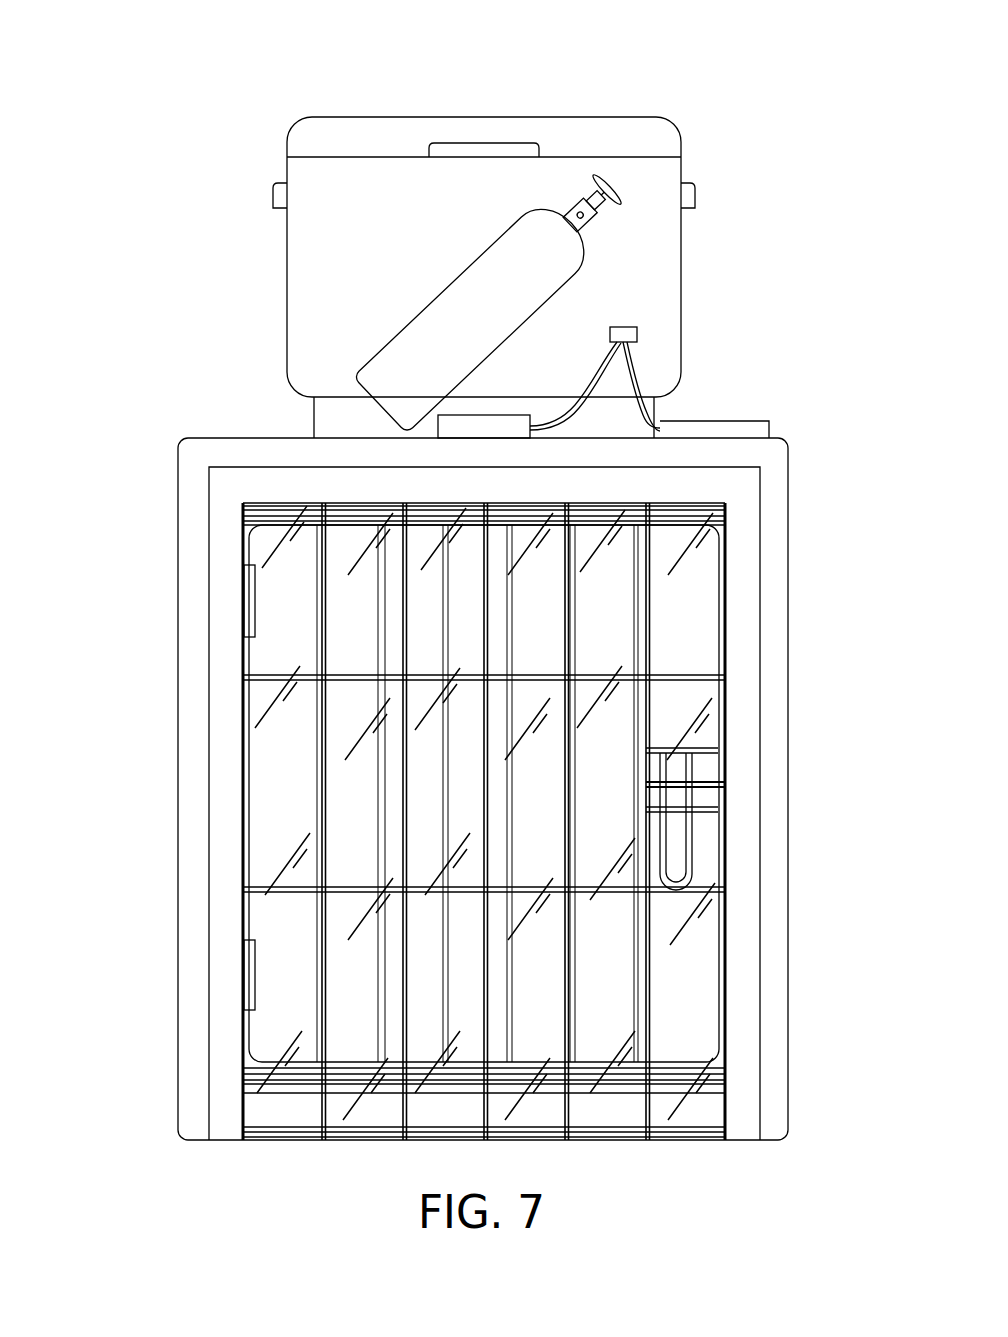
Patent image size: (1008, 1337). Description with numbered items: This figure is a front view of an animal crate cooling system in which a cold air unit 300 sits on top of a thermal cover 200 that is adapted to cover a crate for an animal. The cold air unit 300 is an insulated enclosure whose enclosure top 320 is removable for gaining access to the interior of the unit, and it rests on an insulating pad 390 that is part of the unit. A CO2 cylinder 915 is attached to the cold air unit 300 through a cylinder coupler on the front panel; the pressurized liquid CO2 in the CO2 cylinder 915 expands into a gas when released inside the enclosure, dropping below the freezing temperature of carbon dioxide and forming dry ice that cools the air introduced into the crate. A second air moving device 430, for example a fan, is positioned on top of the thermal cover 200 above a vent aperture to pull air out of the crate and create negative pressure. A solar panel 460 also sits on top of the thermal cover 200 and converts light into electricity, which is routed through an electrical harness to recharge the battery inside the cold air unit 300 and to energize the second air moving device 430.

The thermal cover 200 is at (150, 440).
The cold air unit 300 is at (710, 117).
The enclosure top 320 is at (336, 132).
The insulating pad 390 is at (328, 426).
The second air moving device 430 is at (487, 424).
The solar panel 460 is at (771, 421).
The CO2 cylinder 915 is at (408, 327).